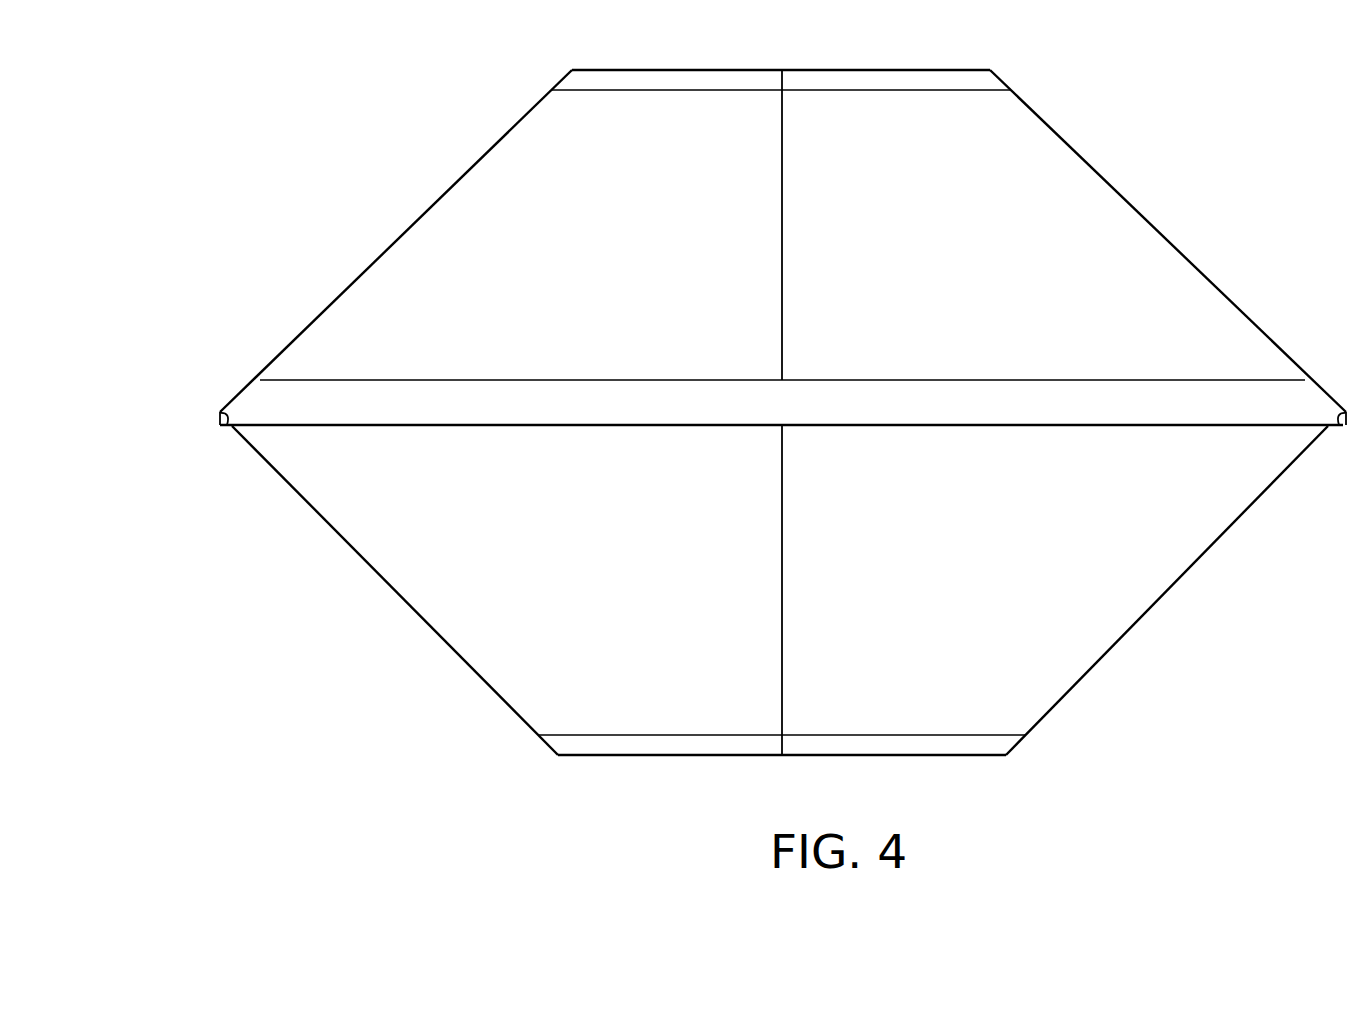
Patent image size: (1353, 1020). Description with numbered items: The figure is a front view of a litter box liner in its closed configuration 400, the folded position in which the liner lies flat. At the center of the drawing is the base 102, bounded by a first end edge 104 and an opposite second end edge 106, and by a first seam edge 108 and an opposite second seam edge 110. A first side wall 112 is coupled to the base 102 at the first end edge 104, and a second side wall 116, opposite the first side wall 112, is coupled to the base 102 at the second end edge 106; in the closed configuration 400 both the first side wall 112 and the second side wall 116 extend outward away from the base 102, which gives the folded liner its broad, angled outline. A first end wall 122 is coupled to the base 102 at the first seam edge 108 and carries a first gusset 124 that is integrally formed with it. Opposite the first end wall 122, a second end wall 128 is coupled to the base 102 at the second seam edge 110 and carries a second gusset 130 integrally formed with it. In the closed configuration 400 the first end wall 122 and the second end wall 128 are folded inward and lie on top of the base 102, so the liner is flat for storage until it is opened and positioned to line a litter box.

The closed configuration 400 is at (252, 171).
The base 102 is at (593, 132).
The first end edge 104 is at (396, 241).
The second end edge 106 is at (1263, 493).
The first seam edge 108 is at (618, 70).
The second seam edge 110 is at (638, 757).
The first side wall 112 is at (432, 578).
The second side wall 116 is at (1110, 230).
The first end wall 122 is at (896, 693).
The first gusset 124 is at (782, 163).
The second end wall 128 is at (828, 132).
The second gusset 130 is at (781, 640).